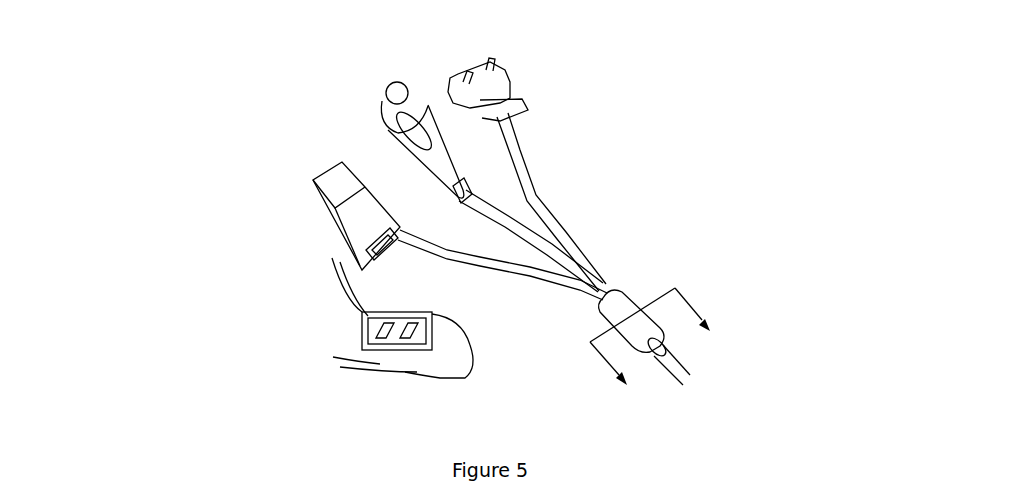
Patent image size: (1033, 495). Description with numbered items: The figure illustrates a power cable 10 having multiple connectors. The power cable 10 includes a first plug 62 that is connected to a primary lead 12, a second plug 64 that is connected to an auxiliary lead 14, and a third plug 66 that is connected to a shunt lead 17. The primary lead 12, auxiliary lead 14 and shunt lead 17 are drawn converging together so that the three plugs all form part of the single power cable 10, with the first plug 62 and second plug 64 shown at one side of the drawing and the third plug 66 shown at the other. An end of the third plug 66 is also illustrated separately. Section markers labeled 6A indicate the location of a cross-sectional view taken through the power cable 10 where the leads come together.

The power cable 10 is at (157, 125).
The primary lead 12 is at (535, 178).
The auxiliary lead 14 is at (472, 217).
The shunt lead 17 is at (425, 245).
The first plug 62 is at (510, 82).
The second plug 64 is at (388, 93).
The third plug 66 is at (323, 195).
The section line for FIG. 6A is at (627, 318).